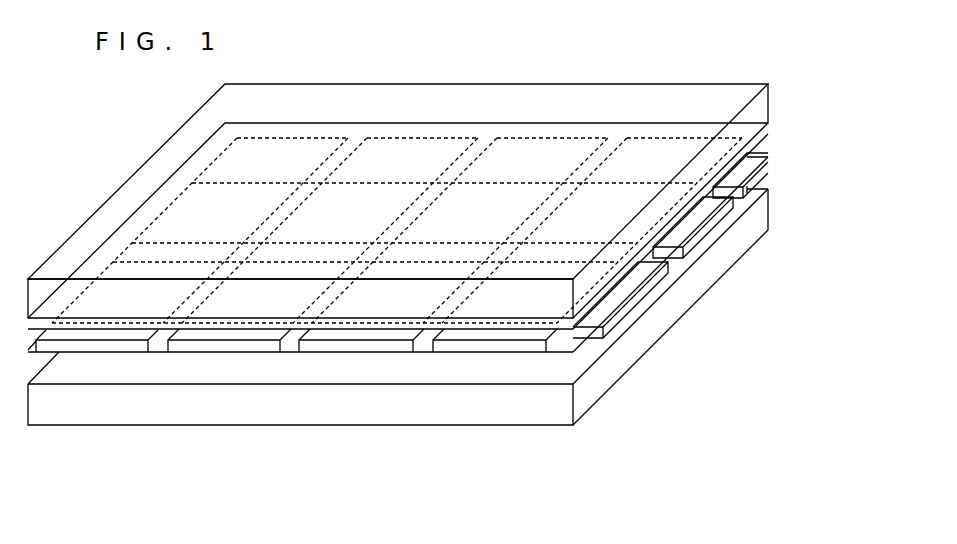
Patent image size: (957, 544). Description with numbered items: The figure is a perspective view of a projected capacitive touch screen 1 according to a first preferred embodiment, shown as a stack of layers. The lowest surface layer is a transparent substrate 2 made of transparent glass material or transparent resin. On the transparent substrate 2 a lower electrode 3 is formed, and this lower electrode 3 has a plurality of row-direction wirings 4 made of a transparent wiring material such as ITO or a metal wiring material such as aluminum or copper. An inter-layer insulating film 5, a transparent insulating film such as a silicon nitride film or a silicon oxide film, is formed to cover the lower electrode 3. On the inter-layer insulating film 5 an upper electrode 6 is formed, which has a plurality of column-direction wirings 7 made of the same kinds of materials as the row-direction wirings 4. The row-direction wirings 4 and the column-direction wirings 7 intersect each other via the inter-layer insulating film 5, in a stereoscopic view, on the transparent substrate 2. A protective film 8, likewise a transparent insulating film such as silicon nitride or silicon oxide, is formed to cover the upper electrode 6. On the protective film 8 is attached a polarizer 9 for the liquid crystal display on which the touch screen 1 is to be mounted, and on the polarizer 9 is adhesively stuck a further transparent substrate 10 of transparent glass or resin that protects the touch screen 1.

The touch screen 1 is at (72, 90).
The transparent substrate 2 is at (52, 397).
The lower electrode 3 is at (700, 282).
The row-direction wirings 4 is at (632, 300).
The inter-layer insulating film 5 is at (588, 347).
The upper electrode 6 is at (292, 421).
The column-direction wirings 7 is at (490, 469).
The protective film 8 is at (565, 342).
The polarizer 9 is at (750, 149).
The transparent substrate 10 is at (763, 107).